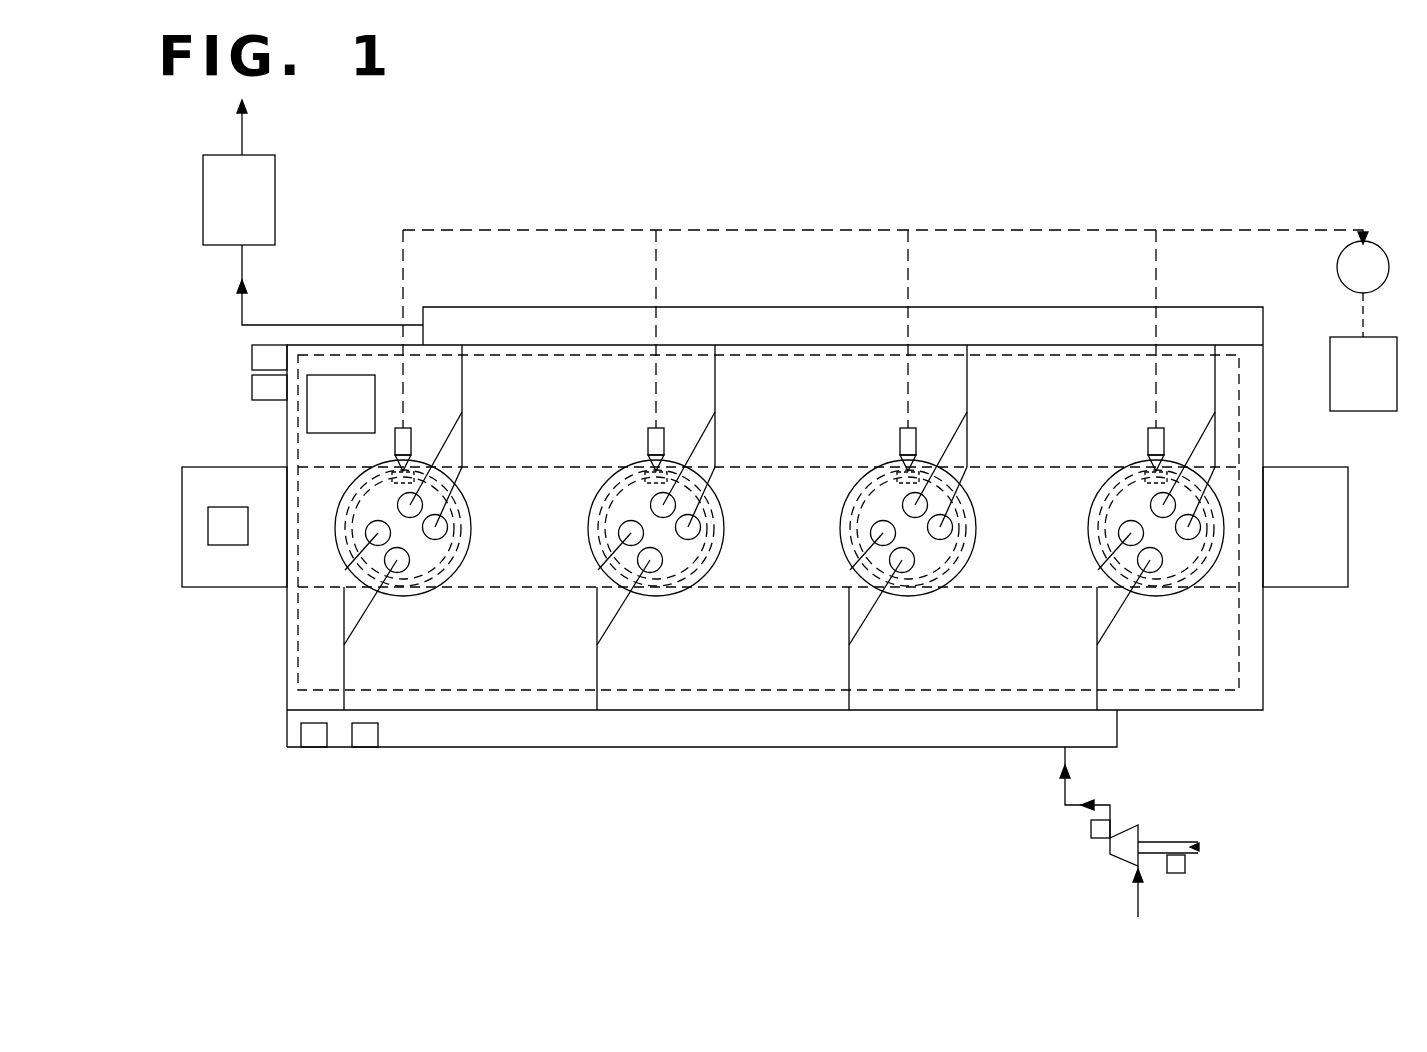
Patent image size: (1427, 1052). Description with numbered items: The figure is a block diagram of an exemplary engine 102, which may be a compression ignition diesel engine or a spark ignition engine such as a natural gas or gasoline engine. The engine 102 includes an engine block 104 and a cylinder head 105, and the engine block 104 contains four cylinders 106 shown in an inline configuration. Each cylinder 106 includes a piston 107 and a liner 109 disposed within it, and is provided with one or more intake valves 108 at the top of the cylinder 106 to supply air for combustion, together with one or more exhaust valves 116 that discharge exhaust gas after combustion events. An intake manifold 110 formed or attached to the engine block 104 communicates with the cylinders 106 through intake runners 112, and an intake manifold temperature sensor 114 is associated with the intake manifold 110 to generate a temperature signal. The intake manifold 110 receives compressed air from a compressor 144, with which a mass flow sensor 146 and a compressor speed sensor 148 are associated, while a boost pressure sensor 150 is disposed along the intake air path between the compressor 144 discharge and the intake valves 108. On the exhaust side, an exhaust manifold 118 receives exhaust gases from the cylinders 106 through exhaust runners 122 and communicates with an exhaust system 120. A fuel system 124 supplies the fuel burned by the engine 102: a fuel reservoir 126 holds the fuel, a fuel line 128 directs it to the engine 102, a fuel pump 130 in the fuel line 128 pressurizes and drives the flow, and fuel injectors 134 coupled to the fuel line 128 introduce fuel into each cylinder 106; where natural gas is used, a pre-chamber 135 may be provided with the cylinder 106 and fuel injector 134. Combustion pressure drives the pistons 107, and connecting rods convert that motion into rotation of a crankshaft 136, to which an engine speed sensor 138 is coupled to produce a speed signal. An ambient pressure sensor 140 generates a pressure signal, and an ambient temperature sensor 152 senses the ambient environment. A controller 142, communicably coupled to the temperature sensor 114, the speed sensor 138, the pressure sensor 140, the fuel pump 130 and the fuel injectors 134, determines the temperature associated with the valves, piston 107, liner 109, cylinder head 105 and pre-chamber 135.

The engine 102 is at (823, 335).
The engine block 104 is at (1215, 722).
The cylinder head 105 is at (287, 668).
The cylinder 106 is at (1196, 535).
The piston 107 is at (355, 512).
The intake valve 108 is at (1152, 565).
The liner 109 is at (368, 478).
The intake manifold 110 is at (553, 737).
The intake runner 112 is at (1097, 692).
The intake manifold temperature sensor 114 is at (313, 737).
The exhaust valve 116 is at (1198, 530).
The exhaust manifold 118 is at (832, 327).
The exhaust system 120 is at (313, 212).
The exhaust runner 122 is at (824, 333).
The fuel system 124 is at (1368, 224).
The fuel reservoir 126 is at (1363, 352).
The fuel line 128 is at (860, 230).
The fuel pump 130 is at (1337, 265).
The fuel injector 134 is at (1170, 455).
The pre-chamber 135 is at (298, 667).
The crankshaft 136 is at (182, 527).
The engine speed sensor 138 is at (228, 547).
The ambient pressure sensor 140 is at (252, 388).
The controller 142 is at (341, 404).
The compressor 144 is at (1118, 857).
The mass flow sensor 146 is at (1091, 826).
The compressor speed sensor 148 is at (1185, 864).
The boost pressure sensor 150 is at (370, 747).
The ambient temperature sensor 152 is at (252, 357).